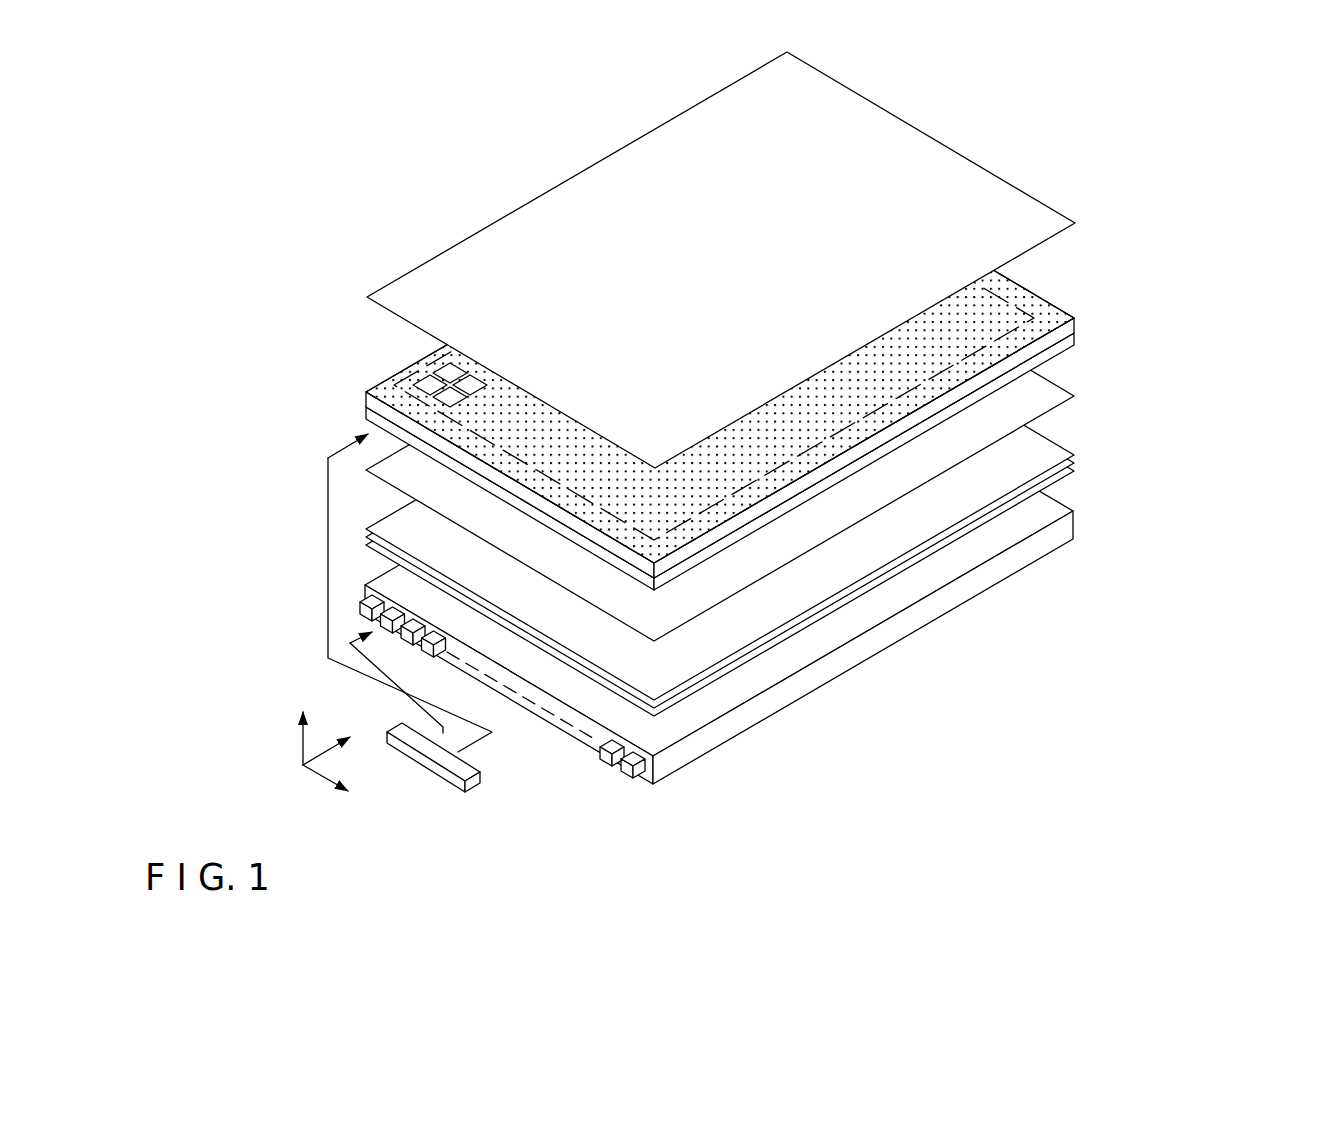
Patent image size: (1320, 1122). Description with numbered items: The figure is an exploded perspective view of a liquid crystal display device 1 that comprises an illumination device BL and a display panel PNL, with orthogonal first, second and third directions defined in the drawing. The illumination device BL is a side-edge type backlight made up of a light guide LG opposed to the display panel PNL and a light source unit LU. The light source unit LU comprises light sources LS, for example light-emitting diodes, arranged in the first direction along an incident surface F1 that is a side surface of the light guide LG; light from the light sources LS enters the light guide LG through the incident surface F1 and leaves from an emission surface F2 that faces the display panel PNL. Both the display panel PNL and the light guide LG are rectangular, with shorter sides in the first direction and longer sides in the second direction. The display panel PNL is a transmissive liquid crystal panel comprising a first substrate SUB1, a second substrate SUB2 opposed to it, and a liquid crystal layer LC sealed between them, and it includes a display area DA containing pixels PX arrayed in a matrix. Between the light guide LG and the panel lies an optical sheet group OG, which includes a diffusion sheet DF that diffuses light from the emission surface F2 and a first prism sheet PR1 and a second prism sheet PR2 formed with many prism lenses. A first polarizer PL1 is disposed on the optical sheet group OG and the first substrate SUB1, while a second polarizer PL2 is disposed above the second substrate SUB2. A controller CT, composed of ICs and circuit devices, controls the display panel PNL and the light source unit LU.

The display device 1 is at (452, 178).
The second polarizer PL2 is at (1042, 202).
The display area DA is at (1017, 287).
The display panel PNL is at (1182, 278).
The second substrate SUB2 is at (1067, 305).
The liquid crystal layer LC is at (1072, 330).
The first substrate SUB1 is at (1067, 355).
The first polarizer PL1 is at (1062, 388).
The optical sheet group OG is at (1165, 413).
The second prism sheet PR2 is at (1065, 443).
The first prism sheet PR1 is at (1075, 460).
The diffusion sheet DF is at (1072, 477).
The pixels PX is at (430, 380).
The illumination device BL is at (805, 736).
The light guide LG is at (712, 737).
The light source unit LU is at (605, 780).
The light sources LS is at (627, 777).
The incident surface F1 is at (543, 714).
The emission surface F2 is at (852, 621).
The controller CT is at (457, 787).